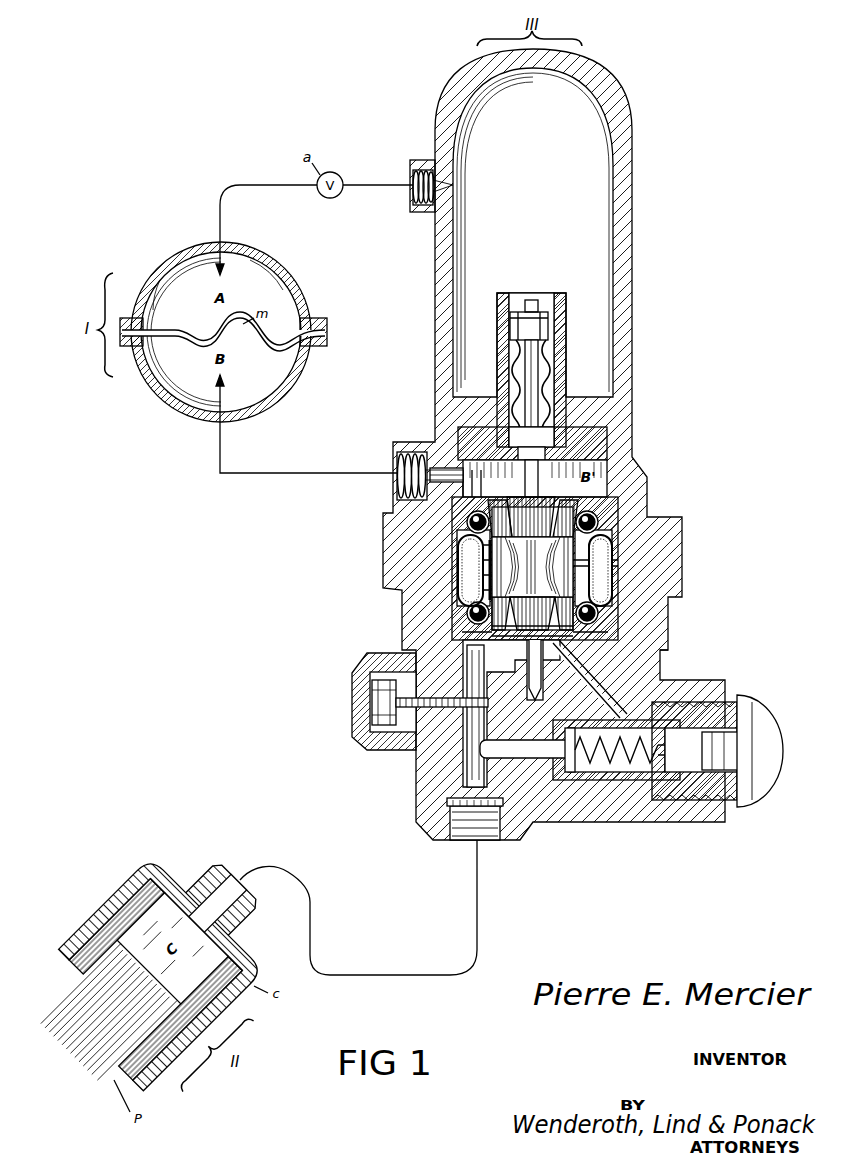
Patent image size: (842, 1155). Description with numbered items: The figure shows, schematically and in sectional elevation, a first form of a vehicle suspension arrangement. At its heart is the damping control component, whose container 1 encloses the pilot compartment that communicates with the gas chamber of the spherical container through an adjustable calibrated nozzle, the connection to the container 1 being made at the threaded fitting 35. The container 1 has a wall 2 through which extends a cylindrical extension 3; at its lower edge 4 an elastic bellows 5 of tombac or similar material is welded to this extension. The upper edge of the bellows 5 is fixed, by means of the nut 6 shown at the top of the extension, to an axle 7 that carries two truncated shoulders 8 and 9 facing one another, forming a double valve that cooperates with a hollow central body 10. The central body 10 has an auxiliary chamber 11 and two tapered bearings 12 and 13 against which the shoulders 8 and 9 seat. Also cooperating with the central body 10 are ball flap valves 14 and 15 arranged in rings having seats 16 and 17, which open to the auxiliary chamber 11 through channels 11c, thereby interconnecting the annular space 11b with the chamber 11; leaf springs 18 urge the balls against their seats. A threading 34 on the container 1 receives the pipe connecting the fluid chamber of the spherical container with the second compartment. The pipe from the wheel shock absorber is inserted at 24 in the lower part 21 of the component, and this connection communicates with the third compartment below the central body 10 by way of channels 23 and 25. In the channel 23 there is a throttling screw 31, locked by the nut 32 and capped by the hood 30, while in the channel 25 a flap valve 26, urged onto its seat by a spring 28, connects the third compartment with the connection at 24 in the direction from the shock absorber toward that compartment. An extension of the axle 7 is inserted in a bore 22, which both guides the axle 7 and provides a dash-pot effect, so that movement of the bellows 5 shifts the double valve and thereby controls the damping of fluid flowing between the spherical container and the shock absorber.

The container 1 is at (617, 111).
The wall 2 is at (437, 410).
The cylindrical extension 3 is at (497, 333).
The lower edge 4 is at (607, 433).
The elastic bellows 5 is at (543, 357).
The nut 6 is at (548, 330).
The axle 7 is at (535, 400).
The truncated shoulder 8 is at (547, 510).
The truncated shoulder 9 is at (662, 651).
The hollow central body 10 is at (618, 540).
The auxiliary chamber 11 is at (455, 570).
The annular space 11b is at (470, 590).
The channels 11c is at (618, 562).
The tapered bearing 12 is at (462, 538).
The tapered bearing 13 is at (478, 628).
The ball flap valve 14 is at (610, 623).
The ball flap valve 15 is at (595, 522).
The seat 16 is at (470, 633).
The seat 17 is at (486, 497).
The leaf springs 18 is at (618, 588).
The lower part 21 is at (437, 776).
The bore 22 is at (545, 685).
The channel 23 is at (463, 750).
The pipe connection 24 is at (460, 838).
The channel 25 is at (622, 696).
The flap valve 26 is at (587, 780).
The spring 28 is at (597, 774).
The hood 30 is at (365, 668).
The throttling screw 31 is at (396, 701).
The nut 32 is at (372, 722).
The threading 34 is at (397, 462).
The fitting 35 is at (410, 172).